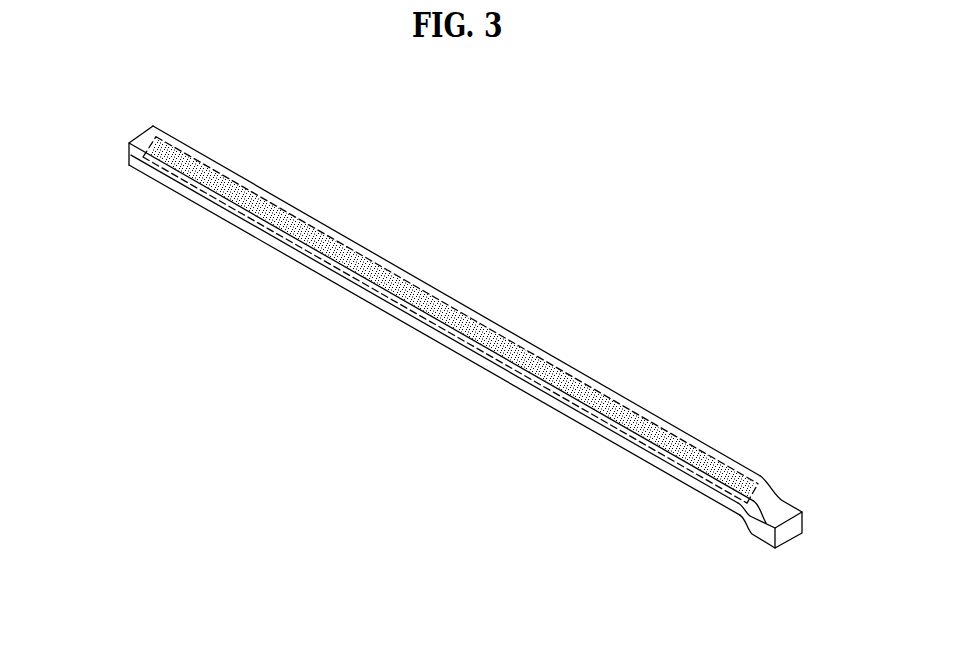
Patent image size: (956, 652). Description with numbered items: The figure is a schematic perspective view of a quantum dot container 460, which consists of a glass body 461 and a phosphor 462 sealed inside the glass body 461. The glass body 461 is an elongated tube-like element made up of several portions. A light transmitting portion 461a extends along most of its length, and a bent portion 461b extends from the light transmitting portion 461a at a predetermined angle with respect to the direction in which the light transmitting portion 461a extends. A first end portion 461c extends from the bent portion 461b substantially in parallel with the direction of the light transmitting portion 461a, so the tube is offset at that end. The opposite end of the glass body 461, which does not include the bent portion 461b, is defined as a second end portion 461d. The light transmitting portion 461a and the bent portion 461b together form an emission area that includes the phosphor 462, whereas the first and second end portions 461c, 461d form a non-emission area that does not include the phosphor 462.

The quantum dot container 460 is at (277, 110).
The glass body 461 is at (561, 359).
The light transmitting portion 461a is at (424, 273).
The bent portion 461b is at (727, 522).
The first end portion 461c is at (800, 510).
The second end portion 461d is at (126, 165).
The phosphor 462 is at (646, 409).